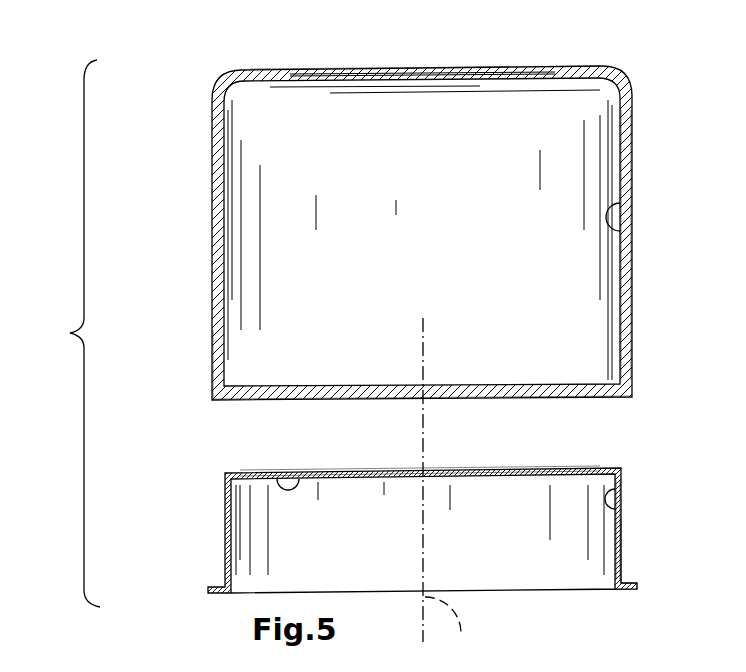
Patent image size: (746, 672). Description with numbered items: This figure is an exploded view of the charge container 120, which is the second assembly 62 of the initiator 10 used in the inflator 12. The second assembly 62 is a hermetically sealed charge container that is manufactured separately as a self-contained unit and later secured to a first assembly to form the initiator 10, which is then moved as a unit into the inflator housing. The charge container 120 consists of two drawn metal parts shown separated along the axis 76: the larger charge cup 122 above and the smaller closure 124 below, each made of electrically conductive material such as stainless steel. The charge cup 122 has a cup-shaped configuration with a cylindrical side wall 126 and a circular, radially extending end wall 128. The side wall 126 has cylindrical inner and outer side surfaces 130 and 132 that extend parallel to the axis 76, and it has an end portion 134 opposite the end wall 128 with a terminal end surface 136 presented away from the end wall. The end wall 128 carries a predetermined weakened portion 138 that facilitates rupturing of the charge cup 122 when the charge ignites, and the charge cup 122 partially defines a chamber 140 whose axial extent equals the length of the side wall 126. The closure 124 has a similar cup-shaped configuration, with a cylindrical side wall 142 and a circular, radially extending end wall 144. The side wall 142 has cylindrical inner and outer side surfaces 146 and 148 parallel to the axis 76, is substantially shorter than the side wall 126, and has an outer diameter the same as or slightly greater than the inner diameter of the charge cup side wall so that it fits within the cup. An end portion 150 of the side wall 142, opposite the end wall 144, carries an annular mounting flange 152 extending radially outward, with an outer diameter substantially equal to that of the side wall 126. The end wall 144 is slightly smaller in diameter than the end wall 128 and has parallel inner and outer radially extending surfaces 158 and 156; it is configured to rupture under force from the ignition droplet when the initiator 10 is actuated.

The initiator 10 is at (170, 184).
The inflator 12 is at (160, 140).
The second assembly 62 is at (178, 224).
The axis 76 is at (454, 627).
The charge container 120 is at (64, 333).
The charge cup 122 is at (212, 260).
The closure 124 is at (222, 545).
The side wall 126 is at (632, 165).
The end wall 128 is at (510, 63).
The inner side surface 130 is at (630, 236).
The outer side surface 132 is at (630, 250).
The end portion 134 is at (213, 358).
The terminal end surface 136 is at (213, 402).
The predetermined weakened portion 138 is at (345, 72).
The chamber 140 is at (500, 294).
The side wall 142 is at (622, 518).
The end wall 144 is at (508, 468).
The inner side surface 146 is at (622, 508).
The outer side surface 148 is at (622, 537).
The end portion 150 is at (622, 560).
The annular mounting flange 152 is at (630, 591).
The outer radially-extending surface 156 is at (283, 477).
The inner radially-extending surface 158 is at (318, 474).